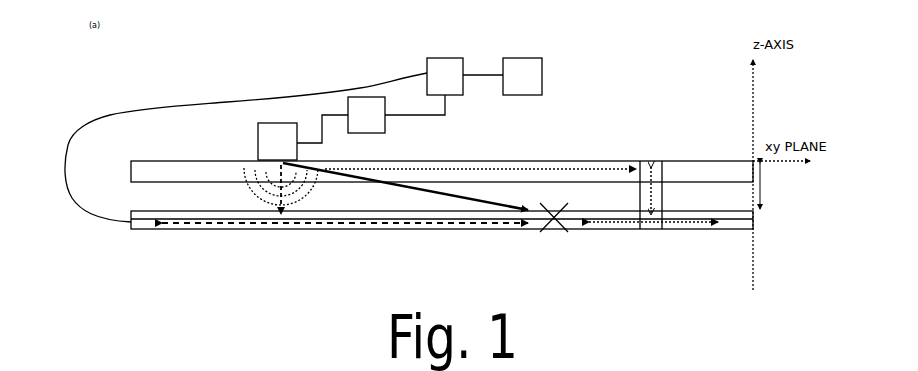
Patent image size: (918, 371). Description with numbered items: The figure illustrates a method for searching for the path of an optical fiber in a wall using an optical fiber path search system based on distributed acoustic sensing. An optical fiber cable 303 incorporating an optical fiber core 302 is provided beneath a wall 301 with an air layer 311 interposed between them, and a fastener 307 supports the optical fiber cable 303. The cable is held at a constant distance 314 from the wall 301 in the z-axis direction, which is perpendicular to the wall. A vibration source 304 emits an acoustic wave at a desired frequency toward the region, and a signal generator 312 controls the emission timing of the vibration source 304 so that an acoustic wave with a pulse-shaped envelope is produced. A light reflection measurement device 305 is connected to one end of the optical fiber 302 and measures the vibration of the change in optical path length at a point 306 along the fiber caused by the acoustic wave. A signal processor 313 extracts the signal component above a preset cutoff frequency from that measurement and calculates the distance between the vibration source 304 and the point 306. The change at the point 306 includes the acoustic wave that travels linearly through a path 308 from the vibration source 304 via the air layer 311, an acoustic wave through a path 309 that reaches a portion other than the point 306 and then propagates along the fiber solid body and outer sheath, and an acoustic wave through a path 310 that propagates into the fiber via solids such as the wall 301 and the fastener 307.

The wall 301 is at (697, 160).
The optical fiber core 302 is at (315, 97).
The optical fiber cable 303 is at (737, 229).
The vibration source 304 is at (255, 145).
The light reflection measurement device 305 is at (440, 58).
The point 306 is at (554, 234).
The fastener 307 is at (657, 160).
The path 308 is at (478, 193).
The path 309 is at (476, 230).
The path 310 is at (620, 230).
The air layer 311 is at (162, 193).
The signal generator 312 is at (385, 125).
The signal processor 313 is at (520, 58).
The constant distance 314 is at (760, 212).